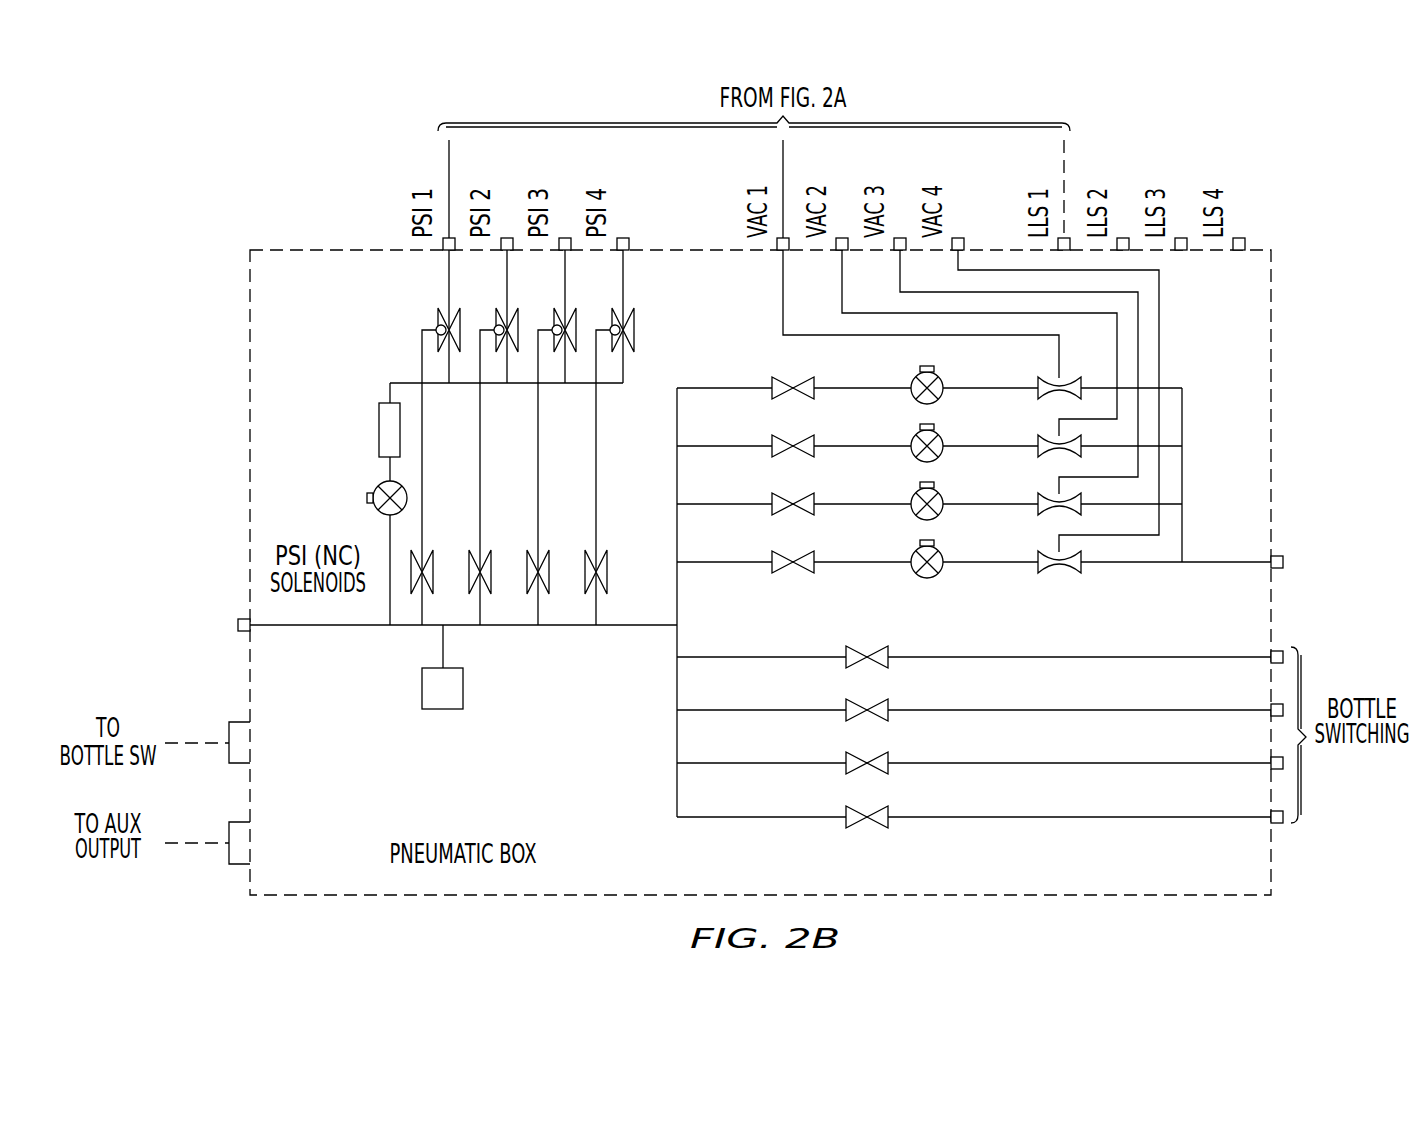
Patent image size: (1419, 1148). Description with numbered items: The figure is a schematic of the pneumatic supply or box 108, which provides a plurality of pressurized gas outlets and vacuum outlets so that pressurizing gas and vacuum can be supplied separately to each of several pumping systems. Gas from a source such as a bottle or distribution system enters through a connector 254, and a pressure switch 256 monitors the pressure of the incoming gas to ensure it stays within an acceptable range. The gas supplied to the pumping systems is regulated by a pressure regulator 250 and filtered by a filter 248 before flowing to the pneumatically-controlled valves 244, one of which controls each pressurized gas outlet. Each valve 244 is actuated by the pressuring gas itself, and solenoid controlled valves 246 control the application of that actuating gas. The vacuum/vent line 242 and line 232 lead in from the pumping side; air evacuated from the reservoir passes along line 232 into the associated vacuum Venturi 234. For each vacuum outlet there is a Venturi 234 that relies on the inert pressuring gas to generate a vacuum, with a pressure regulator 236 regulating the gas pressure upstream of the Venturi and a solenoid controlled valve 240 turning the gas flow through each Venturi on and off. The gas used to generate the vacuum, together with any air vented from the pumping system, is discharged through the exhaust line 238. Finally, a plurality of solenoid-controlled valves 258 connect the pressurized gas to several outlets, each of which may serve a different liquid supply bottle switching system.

The pneumatic supply or box 108 is at (1272, 431).
The vacuum/vent line 242 is at (449, 158).
The line 232 is at (783, 158).
The pneumatically-controlled valve 244 is at (453, 306).
The solenoid controlled valve 246 is at (427, 548).
The filter 248 is at (378, 406).
The pressure regulator 250 is at (366, 499).
The connector 254 is at (358, 627).
The pressure switch 256 is at (464, 688).
The solenoid controlled valve 240 is at (771, 381).
The pressure regulator 236 is at (912, 376).
The vacuum Venturi 234 is at (1049, 377).
The exhaust line 238 is at (1213, 561).
The solenoid-controlled valves 258 is at (888, 662).